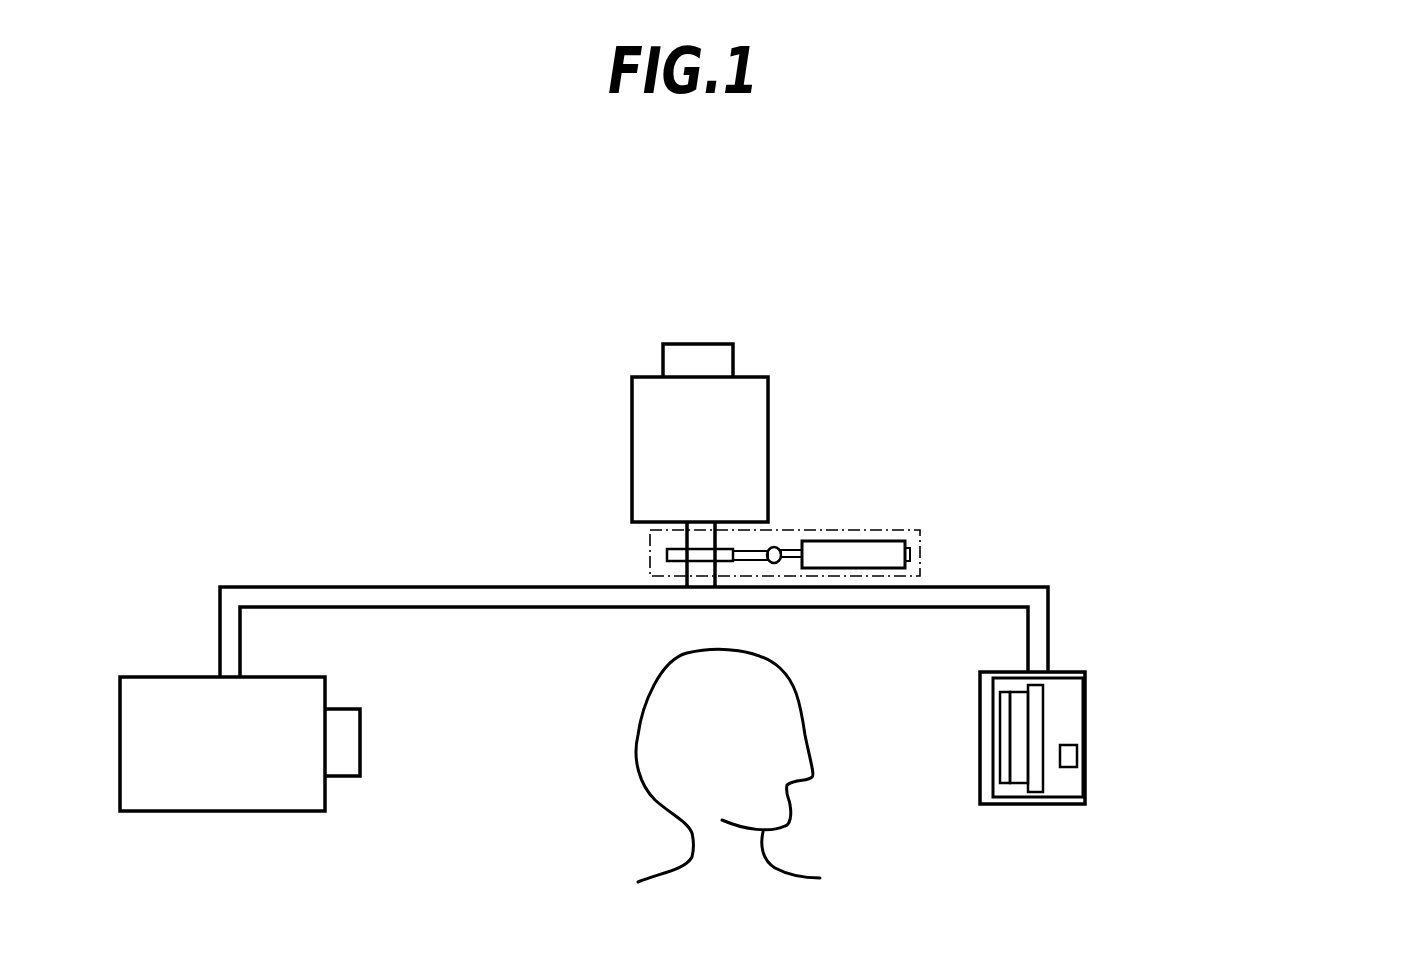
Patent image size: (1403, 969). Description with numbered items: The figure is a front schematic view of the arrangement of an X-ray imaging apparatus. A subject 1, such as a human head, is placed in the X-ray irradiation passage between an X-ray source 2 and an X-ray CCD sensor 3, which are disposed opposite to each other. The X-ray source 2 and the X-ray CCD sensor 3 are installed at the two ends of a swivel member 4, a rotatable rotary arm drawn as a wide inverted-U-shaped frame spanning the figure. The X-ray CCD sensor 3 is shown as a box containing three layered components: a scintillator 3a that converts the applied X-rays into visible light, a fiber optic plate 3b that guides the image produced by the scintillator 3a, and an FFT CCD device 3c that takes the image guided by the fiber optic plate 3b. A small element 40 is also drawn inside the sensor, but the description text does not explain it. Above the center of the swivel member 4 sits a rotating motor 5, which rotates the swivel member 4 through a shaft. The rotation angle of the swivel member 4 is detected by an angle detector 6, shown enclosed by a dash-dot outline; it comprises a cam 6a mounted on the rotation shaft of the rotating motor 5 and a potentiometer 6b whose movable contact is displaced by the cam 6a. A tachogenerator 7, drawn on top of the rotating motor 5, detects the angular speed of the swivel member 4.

The subject 1 is at (657, 785).
The X-ray source 2 is at (220, 811).
The X-ray CCD sensor 3 is at (1161, 772).
The scintillator 3a is at (1013, 696).
The fiber optic plate (FOP) 3b is at (1018, 731).
The FFT CCD device 3c is at (1037, 780).
The CCD element 40 is at (1077, 753).
The swivel member 4 is at (479, 604).
The rotating motor 5 is at (760, 410).
The angle detector 6 is at (814, 532).
The cam 6a is at (653, 552).
The potentiometer 6b is at (912, 552).
The tachogenerator 7 is at (735, 362).